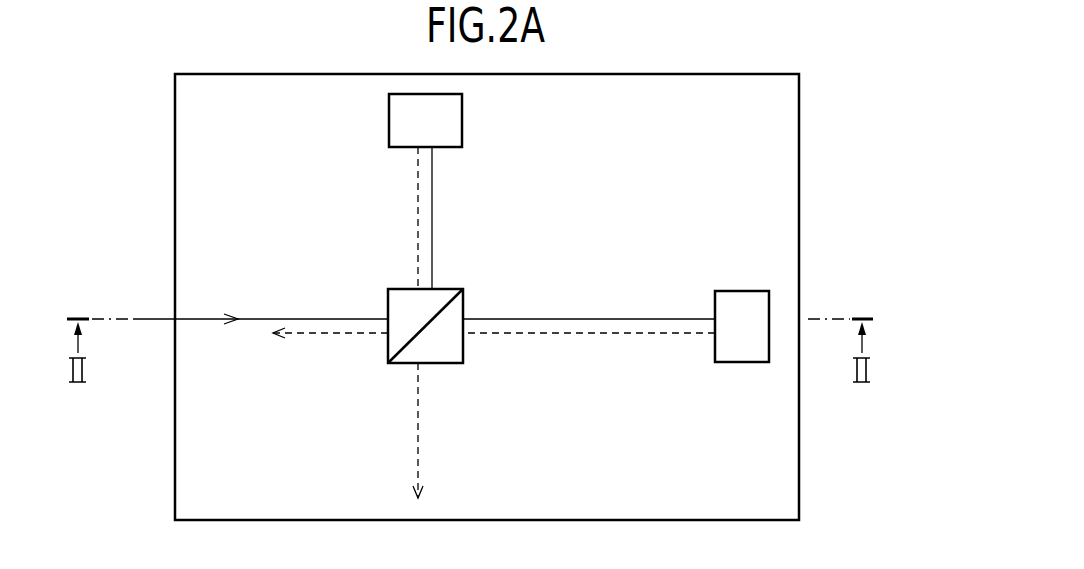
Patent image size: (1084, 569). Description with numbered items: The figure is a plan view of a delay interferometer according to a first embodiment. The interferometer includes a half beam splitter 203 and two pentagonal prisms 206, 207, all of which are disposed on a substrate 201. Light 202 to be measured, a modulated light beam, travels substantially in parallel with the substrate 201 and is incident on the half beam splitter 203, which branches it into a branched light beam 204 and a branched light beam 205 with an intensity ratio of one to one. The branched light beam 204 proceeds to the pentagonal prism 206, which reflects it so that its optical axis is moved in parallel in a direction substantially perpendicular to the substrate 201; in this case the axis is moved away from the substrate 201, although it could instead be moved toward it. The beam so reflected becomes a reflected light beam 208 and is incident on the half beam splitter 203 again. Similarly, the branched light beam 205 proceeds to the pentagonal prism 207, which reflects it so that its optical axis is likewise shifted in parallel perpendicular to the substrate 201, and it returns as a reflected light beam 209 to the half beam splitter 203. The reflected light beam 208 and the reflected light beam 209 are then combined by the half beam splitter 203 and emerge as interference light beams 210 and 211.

The substrate 201 is at (175, 193).
The light to be measured 202 is at (158, 318).
The half beam splitter 203 is at (443, 364).
The branched light beam 204 is at (583, 318).
The branched light beam 205 is at (432, 215).
The pentagonal prism 206 is at (742, 362).
The pentagonal prism 207 is at (389, 118).
The reflected light beam 208 is at (585, 336).
The reflected light beam 209 is at (418, 214).
The interference light beam 210 is at (330, 337).
The interference light beam 211 is at (418, 440).